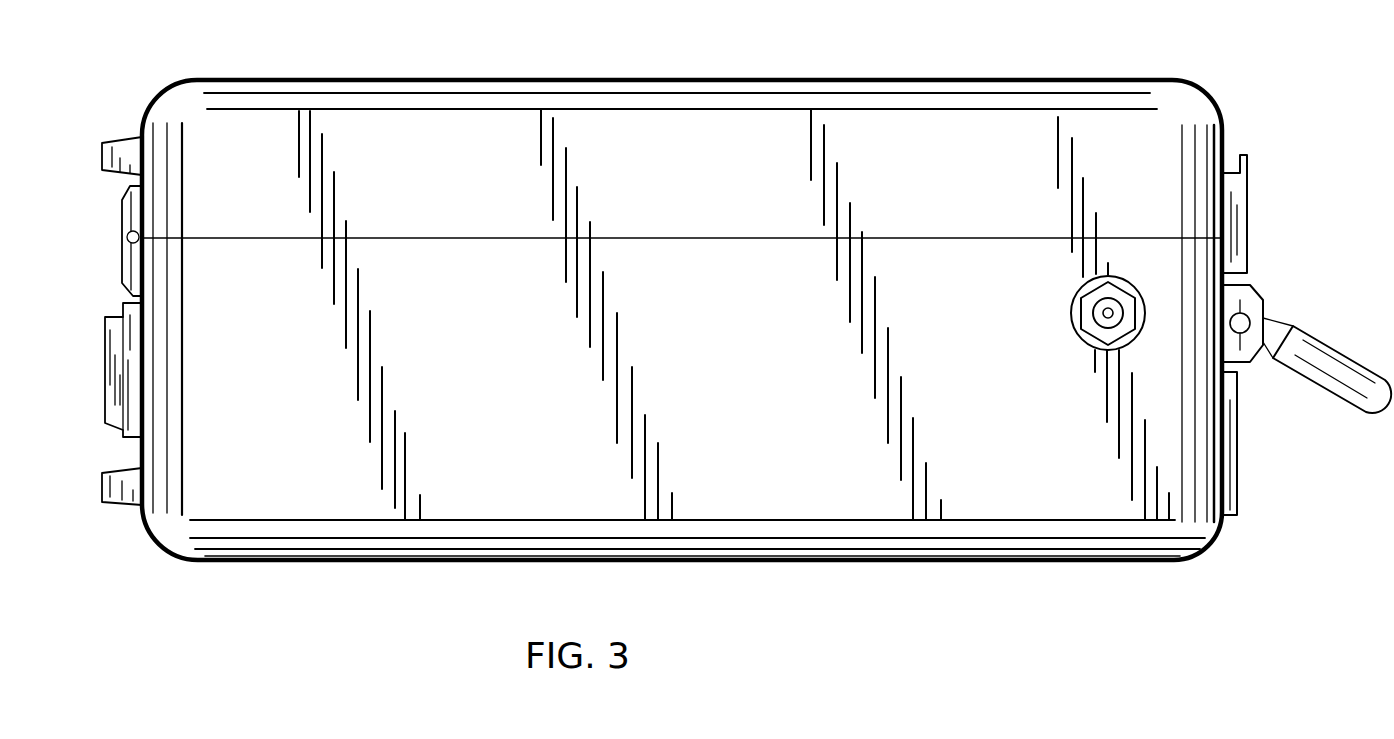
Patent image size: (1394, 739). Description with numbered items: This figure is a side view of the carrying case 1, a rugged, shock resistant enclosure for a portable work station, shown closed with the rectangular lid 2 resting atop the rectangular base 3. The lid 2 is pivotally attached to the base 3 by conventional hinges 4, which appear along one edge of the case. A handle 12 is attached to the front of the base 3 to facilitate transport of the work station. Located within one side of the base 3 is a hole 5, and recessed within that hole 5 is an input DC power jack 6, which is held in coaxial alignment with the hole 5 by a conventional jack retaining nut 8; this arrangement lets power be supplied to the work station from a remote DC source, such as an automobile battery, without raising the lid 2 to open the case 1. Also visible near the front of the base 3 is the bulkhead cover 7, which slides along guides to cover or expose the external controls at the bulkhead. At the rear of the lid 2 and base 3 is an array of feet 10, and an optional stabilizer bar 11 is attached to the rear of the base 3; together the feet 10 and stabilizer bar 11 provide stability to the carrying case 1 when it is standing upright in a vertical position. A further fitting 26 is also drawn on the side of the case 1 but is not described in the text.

The carrying case 1 is at (1013, 52).
The lid 2 is at (1190, 84).
The base 3 is at (1203, 556).
The hinges 4 is at (122, 268).
The hole 5 is at (1130, 340).
The input DC power jack 6 is at (1090, 334).
The bulkhead cover 7 is at (1240, 460).
The jack retaining nut 8 is at (1082, 318).
The feet 10 is at (100, 158).
The stabilizer bar 11 is at (105, 380).
The handle 12 is at (1317, 393).
The bracket 26 is at (1250, 215).